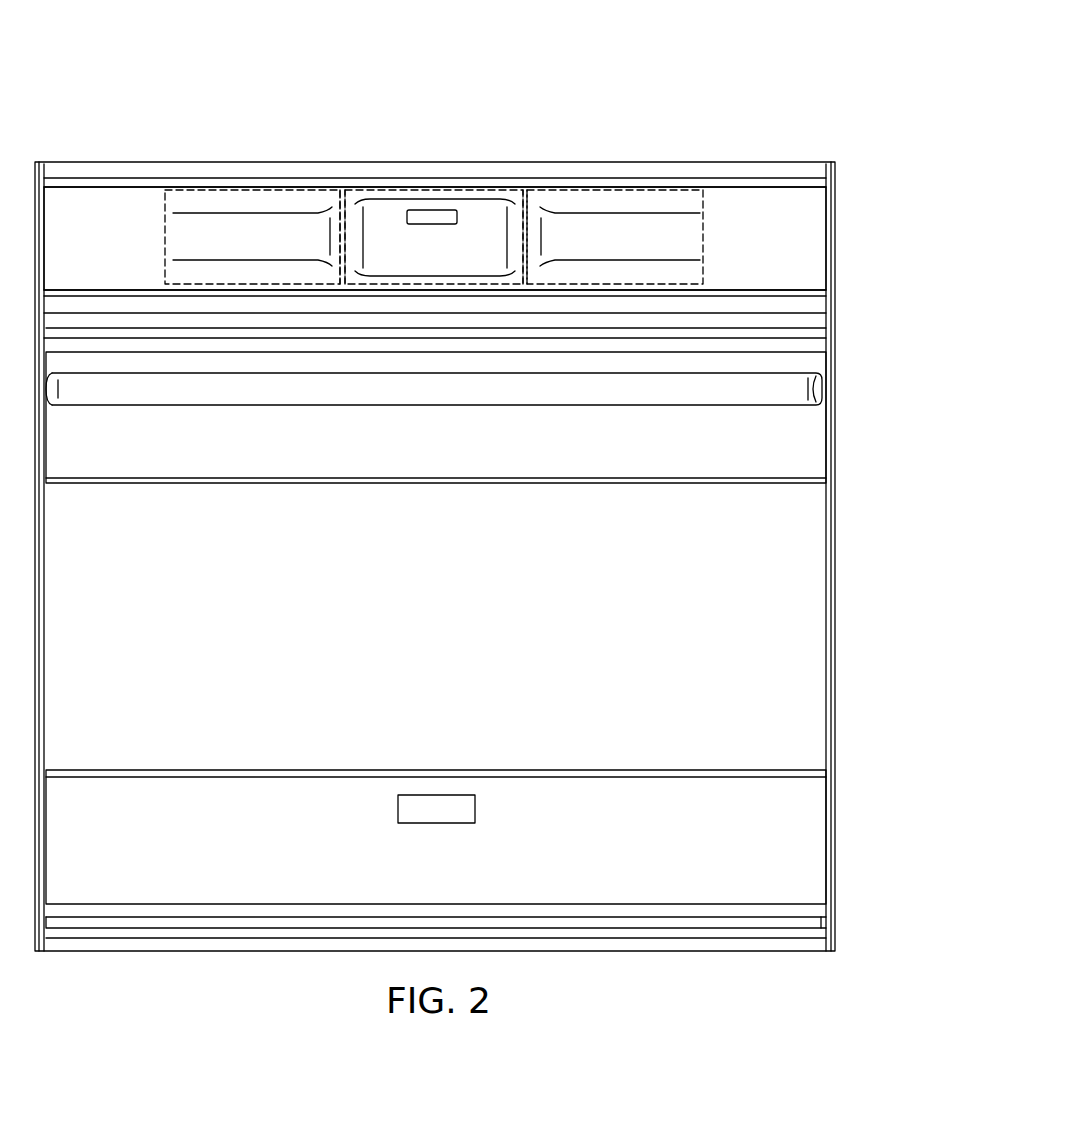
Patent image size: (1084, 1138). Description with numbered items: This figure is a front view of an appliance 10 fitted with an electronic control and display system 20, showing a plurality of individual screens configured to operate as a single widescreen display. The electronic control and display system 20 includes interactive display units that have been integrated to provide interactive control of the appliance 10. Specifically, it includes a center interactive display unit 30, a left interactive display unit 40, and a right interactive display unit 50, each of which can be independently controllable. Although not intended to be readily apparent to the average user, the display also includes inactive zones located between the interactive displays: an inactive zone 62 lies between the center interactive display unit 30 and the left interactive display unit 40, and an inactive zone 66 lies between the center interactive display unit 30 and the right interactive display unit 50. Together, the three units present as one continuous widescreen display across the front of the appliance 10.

The appliance 10 is at (738, 93).
The electronic control and display system 20 is at (114, 208).
The center interactive display unit 30 is at (476, 200).
The left interactive display unit 40 is at (228, 194).
The right interactive display unit 50 is at (654, 194).
The inactive zone 62 is at (345, 190).
The inactive zone 66 is at (523, 193).